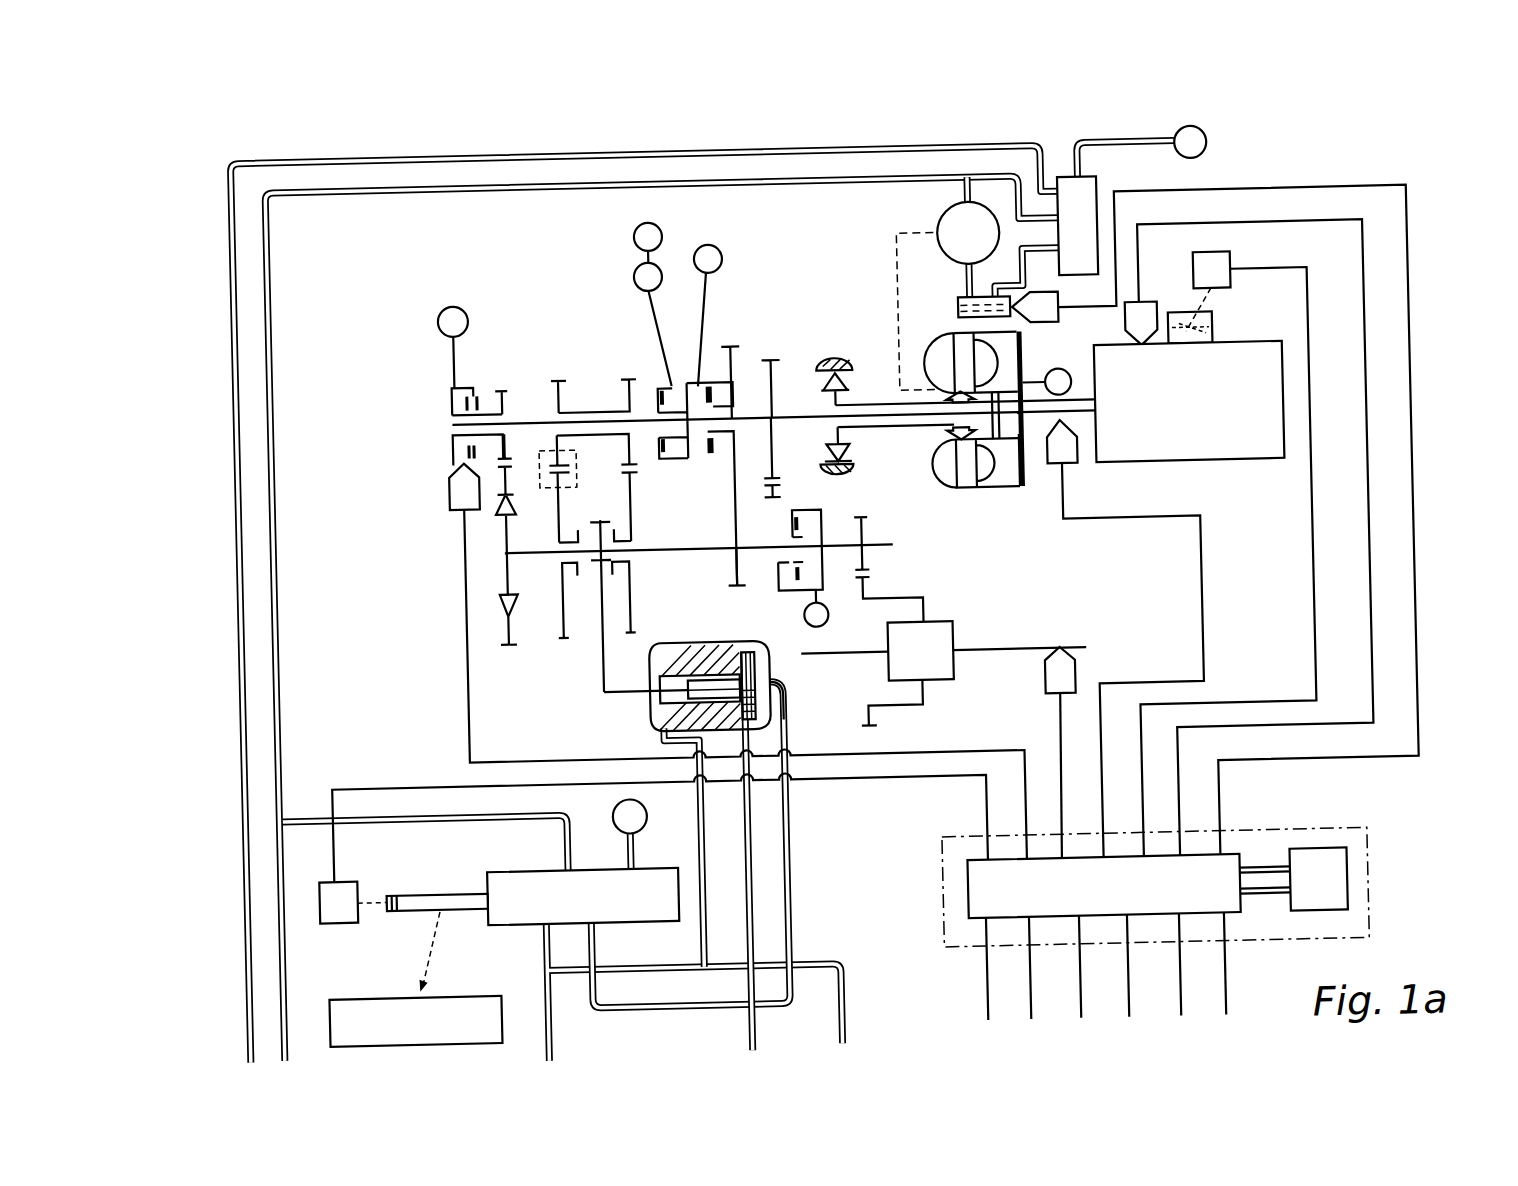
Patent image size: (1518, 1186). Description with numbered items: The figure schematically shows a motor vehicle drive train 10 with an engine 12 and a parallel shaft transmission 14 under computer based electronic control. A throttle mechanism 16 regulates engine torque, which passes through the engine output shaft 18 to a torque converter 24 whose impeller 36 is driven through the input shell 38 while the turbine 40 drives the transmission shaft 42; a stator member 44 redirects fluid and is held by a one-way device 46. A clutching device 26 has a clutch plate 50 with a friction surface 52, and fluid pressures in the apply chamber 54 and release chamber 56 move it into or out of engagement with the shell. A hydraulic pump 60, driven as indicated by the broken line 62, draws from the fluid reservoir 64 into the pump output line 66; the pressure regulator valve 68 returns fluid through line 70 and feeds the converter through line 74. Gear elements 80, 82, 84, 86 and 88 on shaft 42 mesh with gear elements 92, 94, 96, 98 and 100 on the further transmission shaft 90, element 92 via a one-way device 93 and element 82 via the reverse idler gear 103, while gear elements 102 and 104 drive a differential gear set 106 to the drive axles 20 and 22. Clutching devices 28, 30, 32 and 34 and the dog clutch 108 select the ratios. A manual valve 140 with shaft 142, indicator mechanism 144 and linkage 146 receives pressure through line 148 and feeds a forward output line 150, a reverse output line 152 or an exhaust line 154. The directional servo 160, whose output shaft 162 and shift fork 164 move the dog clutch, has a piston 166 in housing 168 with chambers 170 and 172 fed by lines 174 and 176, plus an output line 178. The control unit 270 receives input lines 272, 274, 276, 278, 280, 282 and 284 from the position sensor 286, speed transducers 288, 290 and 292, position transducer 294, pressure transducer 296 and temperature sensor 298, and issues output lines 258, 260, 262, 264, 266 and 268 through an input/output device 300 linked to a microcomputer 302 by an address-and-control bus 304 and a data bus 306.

The motor vehicle drive train 10 is at (416, 260).
The engine 12 is at (1232, 451).
The parallel shaft transmission 14 is at (400, 418).
The throttle mechanism 16 is at (1219, 335).
The engine output shaft 18 is at (1084, 419).
The drive axle 20 is at (830, 656).
The drive axle 22 is at (1009, 655).
The torque converter 24 is at (893, 363).
The clutching device 26 is at (1034, 353).
The clutching device 28 is at (456, 393).
The clutching device 30 is at (667, 387).
The clutching device 32 is at (824, 511).
The clutching device 34 is at (713, 383).
The impeller 36 is at (945, 364).
The input shell 38 is at (1002, 498).
The turbine 40 is at (976, 488).
The transmission shaft 42 is at (805, 393).
The stator member 44 is at (961, 449).
The one-way device 46 is at (861, 388).
The clutch plate 50 is at (1014, 498).
The friction surface 52 is at (1026, 506).
The apply chamber 54 is at (1027, 471).
The release chamber 56 is at (1030, 384).
The hydraulic pump 60 is at (956, 227).
The broken line 62 is at (905, 263).
The fluid reservoir 64 is at (966, 304).
The pump output line 66 is at (790, 183).
The pressure regulator valve 68 is at (1105, 196).
The line 70 is at (1040, 255).
The line 74 is at (507, 156).
The gear element 80 is at (505, 386).
The gear element 82 is at (570, 376).
The gear element 84 is at (633, 374).
The gear element 86 is at (744, 349).
The gear element 88 is at (784, 363).
The transmission shaft 90 is at (694, 546).
The gear element 92 is at (504, 619).
The one-way device 93 is at (519, 506).
The gear element 94 is at (562, 607).
The gear element 96 is at (633, 600).
The gear element 98 is at (736, 560).
The gear element 100 is at (778, 580).
The gear element 102 is at (894, 551).
The reverse idler gear 103 is at (580, 466).
The gear element 104 is at (871, 581).
The differential gear set 106 is at (945, 632).
The dog clutch 108 is at (598, 572).
The manual valve 140 is at (509, 872).
The shaft 142 is at (425, 887).
The indicator mechanism 144 is at (473, 989).
The broken line 146 is at (424, 941).
The line 148 is at (485, 813).
The forward output line 150 is at (535, 951).
The reverse output line 152 is at (588, 951).
The exhaust line 154 is at (617, 845).
The directional servo 160 is at (642, 703).
The output shaft 162 is at (650, 687).
The shift fork 164 is at (598, 676).
The piston 166 is at (695, 680).
The servo housing 168 is at (649, 727).
The chamber 170 is at (659, 645).
The chamber 172 is at (756, 662).
The line 174 is at (699, 859).
The line 176 is at (785, 861).
The output line 178 is at (738, 1040).
The output line 258 is at (979, 976).
The output line 260 is at (1021, 992).
The output line 262 is at (1071, 993).
The output line 264 is at (1121, 1003).
The output line 266 is at (1171, 999).
The output line 268 is at (1216, 996).
The control unit 270 is at (1368, 891).
The input line 272 is at (984, 790).
The input line 274 is at (981, 760).
The input line 276 is at (1060, 727).
The input line 278 is at (1204, 668).
The input line 280 is at (1314, 578).
The input line 282 is at (1370, 574).
The input line 284 is at (1417, 737).
The position sensor 286 is at (343, 909).
The speed transducer 288 is at (454, 498).
The speed transducer 290 is at (1074, 672).
The speed transducer 292 is at (1079, 462).
The position transducer 294 is at (1233, 271).
The pressure transducer 296 is at (1147, 309).
The temperature sensor 298 is at (1069, 307).
The input/output device 300 is at (968, 893).
The microcomputer 302 is at (1327, 868).
The address-and-control bus 304 is at (1256, 878).
The data bus 306 is at (1261, 905).